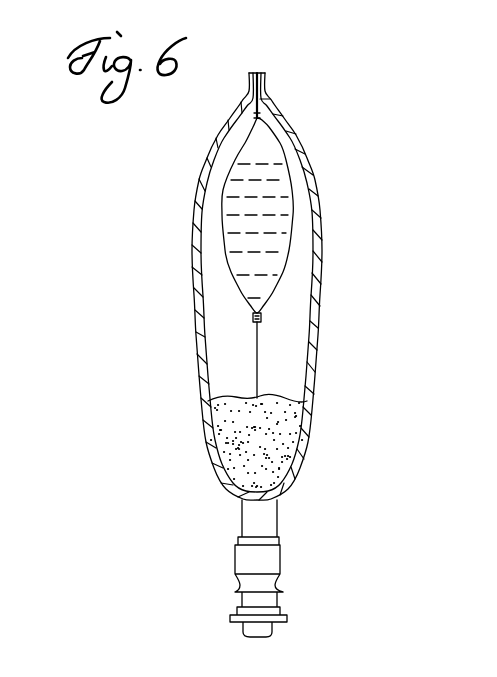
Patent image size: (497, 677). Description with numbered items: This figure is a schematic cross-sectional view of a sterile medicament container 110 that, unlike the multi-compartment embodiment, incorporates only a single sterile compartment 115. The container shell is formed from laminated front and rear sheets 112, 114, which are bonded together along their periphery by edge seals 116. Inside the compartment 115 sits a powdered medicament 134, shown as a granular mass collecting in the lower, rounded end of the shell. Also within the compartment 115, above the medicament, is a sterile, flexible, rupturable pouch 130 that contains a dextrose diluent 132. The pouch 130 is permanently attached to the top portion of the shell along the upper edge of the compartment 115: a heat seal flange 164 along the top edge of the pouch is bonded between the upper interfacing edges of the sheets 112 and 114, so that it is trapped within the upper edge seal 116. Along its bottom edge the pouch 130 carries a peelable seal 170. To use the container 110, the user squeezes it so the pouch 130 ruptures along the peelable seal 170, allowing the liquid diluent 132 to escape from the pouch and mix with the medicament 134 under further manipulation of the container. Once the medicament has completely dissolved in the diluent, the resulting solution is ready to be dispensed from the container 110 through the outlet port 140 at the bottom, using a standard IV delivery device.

The sterile medicament container 110 is at (199, 163).
The front sheet 112 is at (198, 300).
The rear sheet 114 is at (320, 287).
The sterile compartment 115 is at (224, 364).
The peripheral edge seal 116 is at (259, 86).
The pouch 130 is at (287, 168).
The dextrose diluent 132 is at (268, 221).
The powdered medicament 134 is at (262, 444).
The outlet port 140 is at (238, 560).
The heat seal flange 164 is at (258, 117).
The peelable seal 170 is at (263, 321).